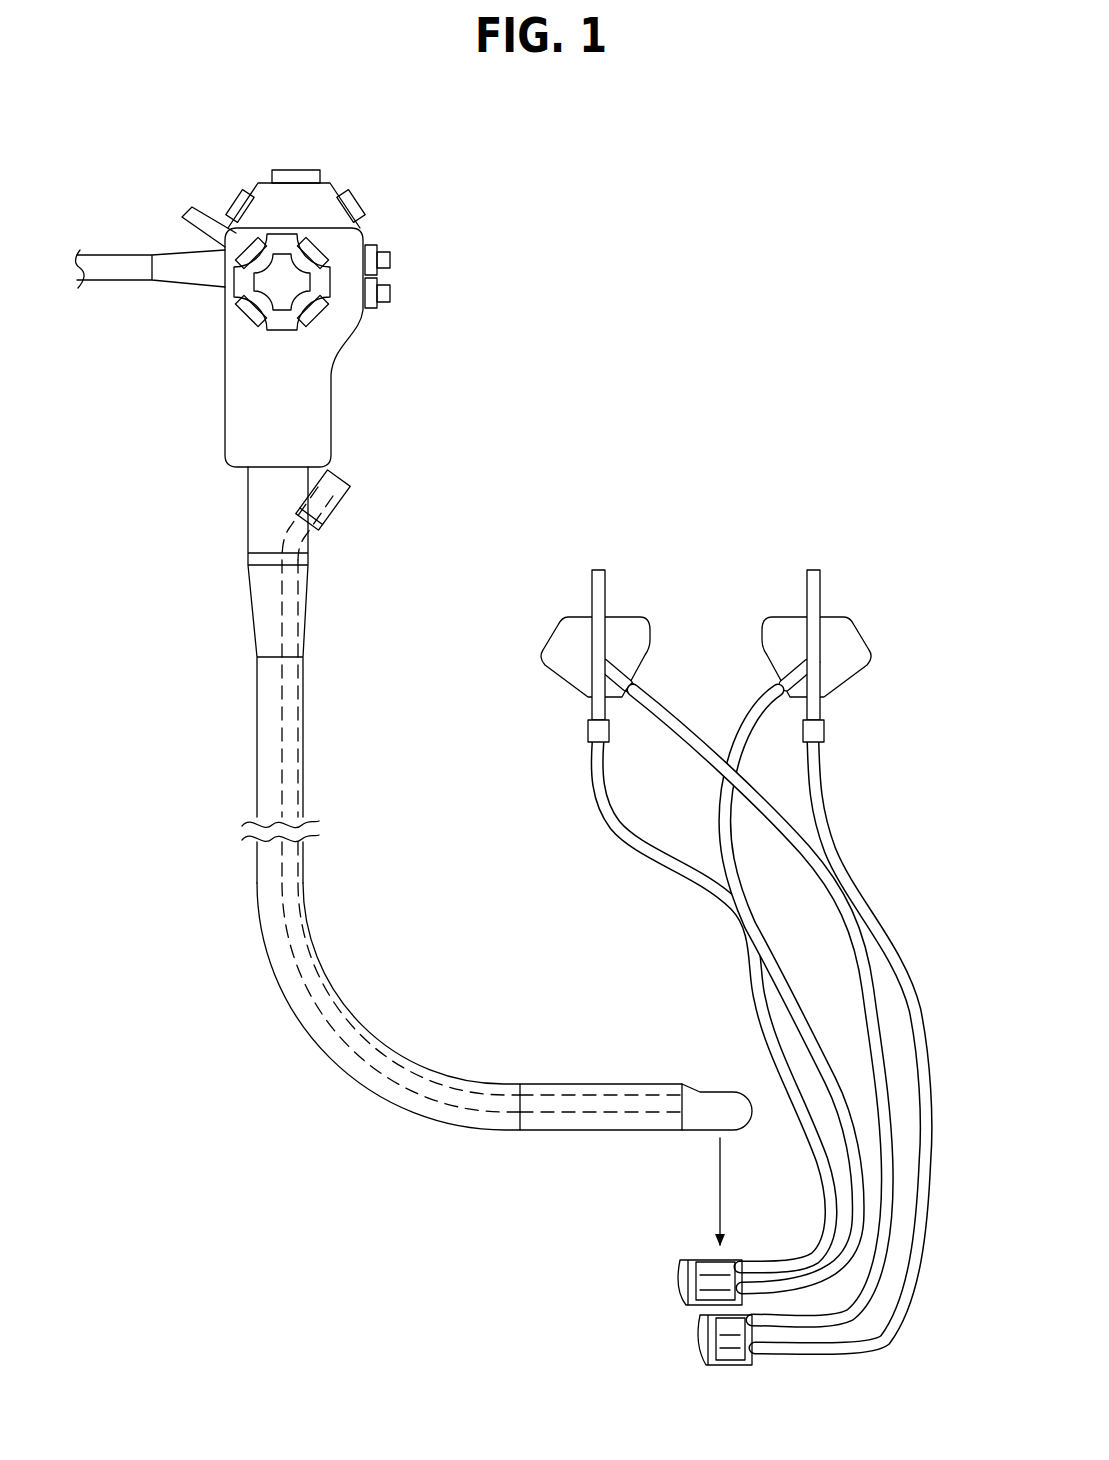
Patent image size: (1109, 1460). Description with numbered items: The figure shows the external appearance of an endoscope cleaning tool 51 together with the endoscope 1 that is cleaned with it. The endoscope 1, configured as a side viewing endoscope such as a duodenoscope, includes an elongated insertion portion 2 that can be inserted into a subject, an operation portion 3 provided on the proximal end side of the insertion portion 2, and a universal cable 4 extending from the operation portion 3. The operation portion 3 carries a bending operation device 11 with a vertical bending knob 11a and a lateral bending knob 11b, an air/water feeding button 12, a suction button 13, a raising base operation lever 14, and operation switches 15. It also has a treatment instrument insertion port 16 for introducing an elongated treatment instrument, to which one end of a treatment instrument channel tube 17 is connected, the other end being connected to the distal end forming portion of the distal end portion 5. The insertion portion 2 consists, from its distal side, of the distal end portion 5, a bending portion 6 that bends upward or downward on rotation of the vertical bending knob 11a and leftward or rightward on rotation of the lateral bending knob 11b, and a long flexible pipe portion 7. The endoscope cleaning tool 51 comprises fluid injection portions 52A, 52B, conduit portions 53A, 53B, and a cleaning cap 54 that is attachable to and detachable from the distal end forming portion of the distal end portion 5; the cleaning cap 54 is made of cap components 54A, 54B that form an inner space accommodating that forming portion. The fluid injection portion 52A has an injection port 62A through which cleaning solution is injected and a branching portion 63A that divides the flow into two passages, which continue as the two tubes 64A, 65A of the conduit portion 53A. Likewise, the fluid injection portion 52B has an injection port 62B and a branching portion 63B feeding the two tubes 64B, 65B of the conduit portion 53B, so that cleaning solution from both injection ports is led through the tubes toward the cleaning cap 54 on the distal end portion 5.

The endoscope 1 is at (410, 680).
The insertion portion 2 is at (497, 872).
The operation portion 3 is at (317, 321).
The universal cable 4 is at (130, 268).
The distal end portion 5 is at (708, 1159).
The bending portion 6 is at (582, 1131).
The flexible pipe portion 7 is at (481, 1131).
The bending operation device 11 is at (199, 320).
The vertical bending knob 11a is at (248, 312).
The lateral bending knob 11b is at (287, 330).
The air/water feeding button 12 is at (392, 296).
The suction button 13 is at (392, 261).
The raising base operation lever 14 is at (196, 213).
The operation switches 15 is at (234, 214).
The treatment instrument insertion port 16 is at (348, 474).
The treatment instrument channel tube 17 is at (306, 878).
The endoscope cleaning tool 51 is at (705, 905).
The fluid injection portion 52A is at (522, 665).
The fluid injection portion 52B is at (889, 662).
The conduit portion 53A is at (641, 1004).
The conduit portion 53B is at (853, 1019).
The cleaning cap 54 is at (637, 1321).
The cap component 54A is at (681, 1345).
The cap component 54B is at (666, 1294).
The injection port 62A is at (600, 565).
The injection port 62B is at (815, 565).
The branching portion 63A is at (618, 645).
The branching portion 63B is at (787, 645).
The tube 64A is at (657, 728).
The tube 64B is at (753, 738).
The tube 65A is at (517, 777).
The tube 65B is at (823, 833).